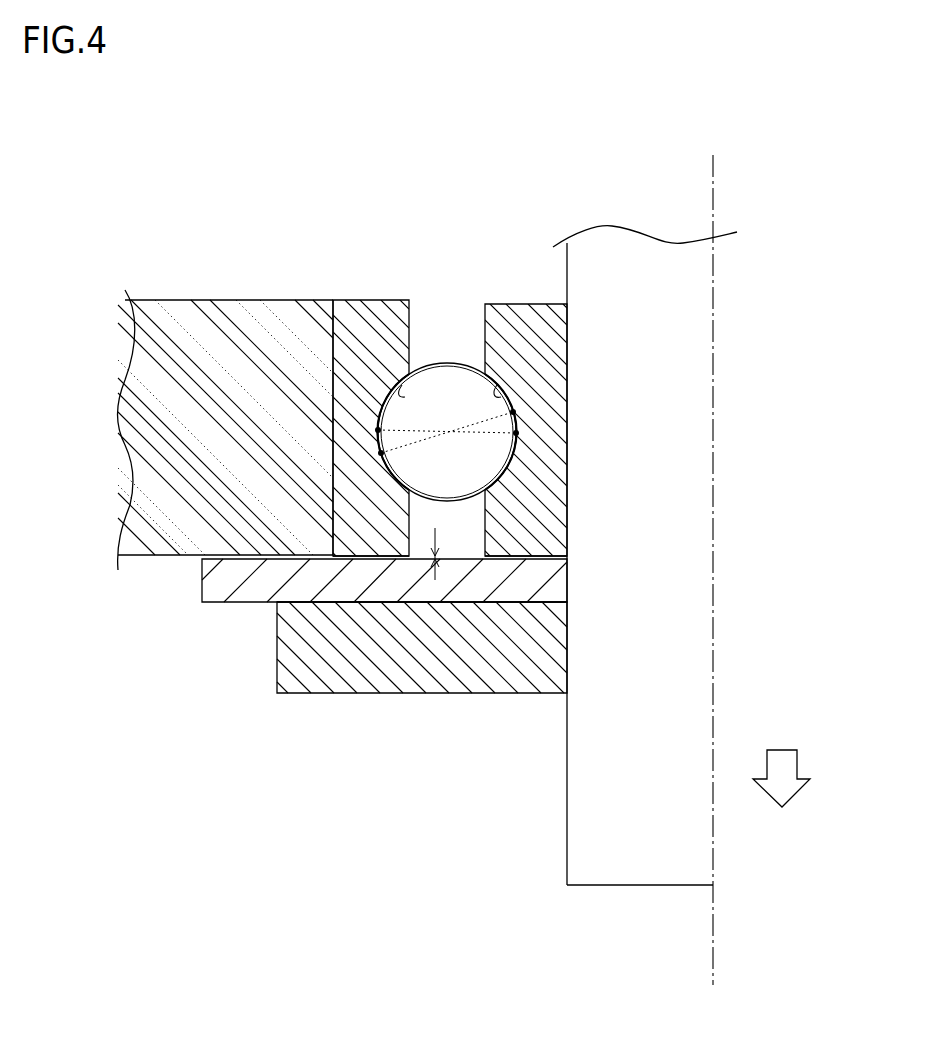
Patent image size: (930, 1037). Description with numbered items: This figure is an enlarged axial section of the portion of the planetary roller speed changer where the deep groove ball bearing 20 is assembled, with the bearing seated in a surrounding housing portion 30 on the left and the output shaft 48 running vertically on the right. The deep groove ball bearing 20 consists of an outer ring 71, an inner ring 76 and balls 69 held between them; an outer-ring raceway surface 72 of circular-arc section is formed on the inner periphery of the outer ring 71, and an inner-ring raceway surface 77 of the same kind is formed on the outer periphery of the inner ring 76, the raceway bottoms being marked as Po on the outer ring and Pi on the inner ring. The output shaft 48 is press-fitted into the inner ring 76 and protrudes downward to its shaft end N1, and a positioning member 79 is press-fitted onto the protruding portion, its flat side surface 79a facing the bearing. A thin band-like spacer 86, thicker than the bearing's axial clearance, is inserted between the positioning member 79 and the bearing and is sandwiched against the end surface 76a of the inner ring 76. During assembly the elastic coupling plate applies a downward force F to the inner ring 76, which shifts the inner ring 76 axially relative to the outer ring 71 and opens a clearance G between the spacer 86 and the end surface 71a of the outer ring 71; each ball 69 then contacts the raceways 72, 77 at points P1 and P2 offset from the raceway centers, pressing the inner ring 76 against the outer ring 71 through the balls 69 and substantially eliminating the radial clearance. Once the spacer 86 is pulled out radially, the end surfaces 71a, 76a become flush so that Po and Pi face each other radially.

The deep groove ball bearing 20 is at (332, 273).
The housing 30 is at (226, 299).
The output shaft 48 is at (698, 290).
The balls 69 is at (447, 363).
The outer ring 71 is at (399, 300).
The end surface of the outer ring 71a is at (376, 560).
The outer-ring raceway surface 72 is at (398, 395).
The inner ring 76 is at (503, 304).
The end surface of the inner ring 76a is at (525, 559).
The inner-ring raceway surface 77 is at (497, 397).
The positioning member 79 is at (298, 695).
The side surface of the positioning member 79a is at (490, 598).
The spacer 86 is at (230, 605).
The clearance G is at (446, 550).
The force F is at (783, 760).
The shaft end of the output shaft N1 is at (625, 890).
The raceway bottom of the outer-ring raceway surface Po is at (378, 430).
The raceway bottom of the inner-ring raceway surface Pi is at (546, 463).
The contact point on the outer-ring raceway surface P1 is at (381, 453).
The contact point on the inner-ring raceway surface P2 is at (513, 412).